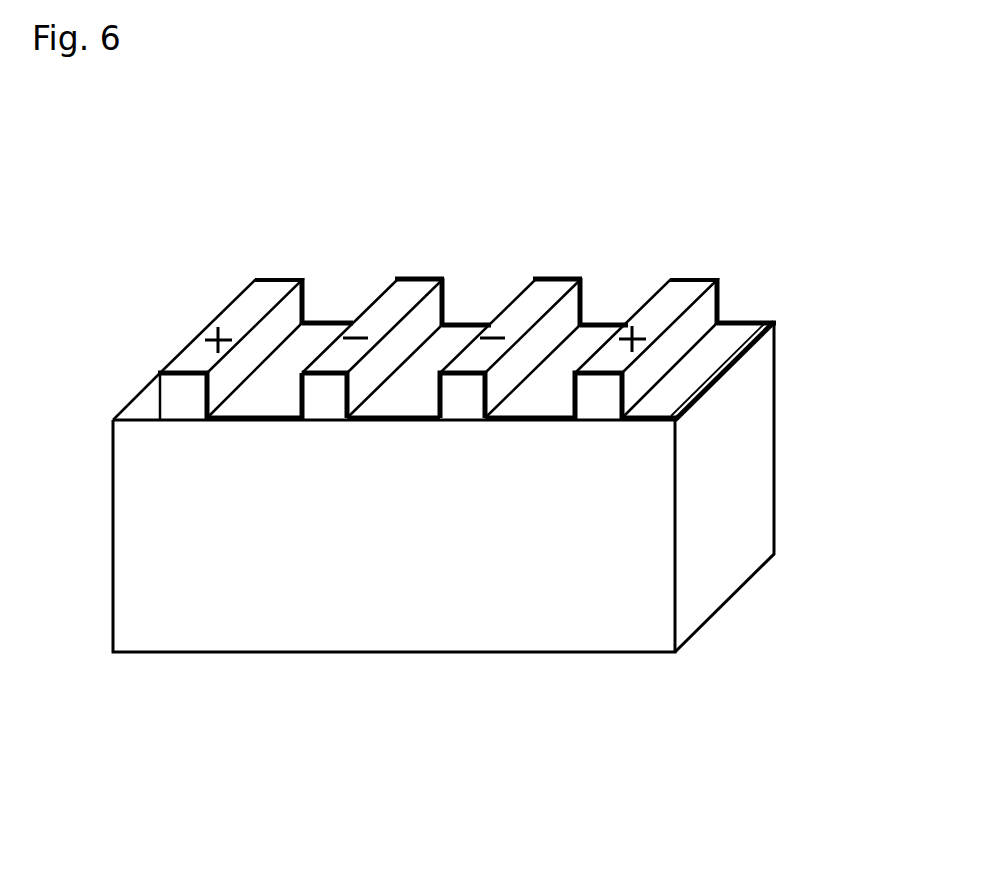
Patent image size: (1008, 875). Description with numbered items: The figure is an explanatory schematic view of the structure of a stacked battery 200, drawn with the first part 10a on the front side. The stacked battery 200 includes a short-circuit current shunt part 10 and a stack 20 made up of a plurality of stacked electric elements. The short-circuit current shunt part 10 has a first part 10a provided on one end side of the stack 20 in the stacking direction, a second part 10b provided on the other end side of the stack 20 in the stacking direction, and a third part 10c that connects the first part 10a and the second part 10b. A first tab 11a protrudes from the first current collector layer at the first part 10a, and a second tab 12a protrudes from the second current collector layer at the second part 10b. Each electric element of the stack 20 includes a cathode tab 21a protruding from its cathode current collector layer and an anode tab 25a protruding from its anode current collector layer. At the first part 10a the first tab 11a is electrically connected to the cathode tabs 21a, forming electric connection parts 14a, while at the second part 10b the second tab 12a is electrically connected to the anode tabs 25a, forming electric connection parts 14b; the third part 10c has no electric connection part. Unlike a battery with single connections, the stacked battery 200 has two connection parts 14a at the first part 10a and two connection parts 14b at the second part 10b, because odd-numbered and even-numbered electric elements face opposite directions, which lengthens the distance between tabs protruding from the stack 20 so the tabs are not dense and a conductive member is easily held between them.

The stacked battery 200 is at (493, 166).
The short-circuit current shunt part 10 is at (705, 659).
The first part 10a is at (361, 623).
The second part 10b is at (784, 330).
The third part 10c is at (744, 475).
The first tab 11a is at (183, 403).
The electric connection part 14a is at (157, 371).
The electric connection part 14b is at (417, 273).
The second tab 12a is at (427, 270).
The stack 20 is at (183, 313).
The cathode tab 21a is at (248, 317).
The anode tab 25a is at (383, 318).